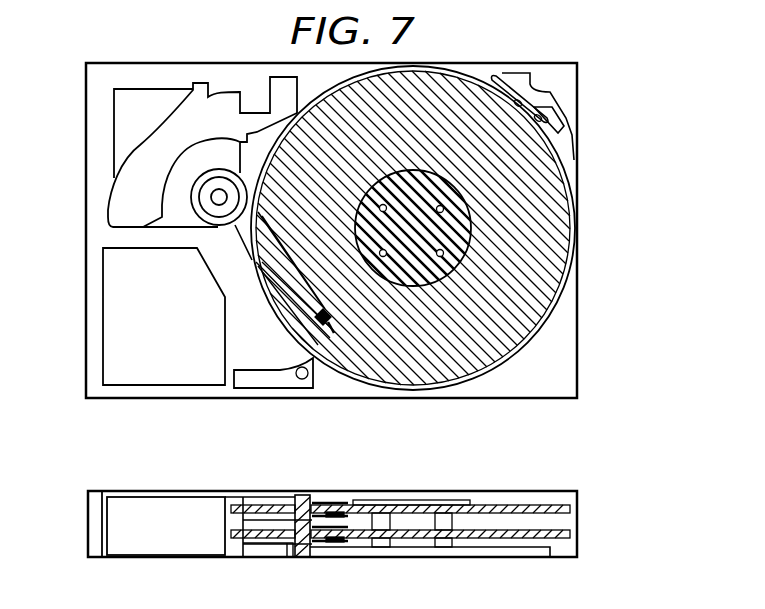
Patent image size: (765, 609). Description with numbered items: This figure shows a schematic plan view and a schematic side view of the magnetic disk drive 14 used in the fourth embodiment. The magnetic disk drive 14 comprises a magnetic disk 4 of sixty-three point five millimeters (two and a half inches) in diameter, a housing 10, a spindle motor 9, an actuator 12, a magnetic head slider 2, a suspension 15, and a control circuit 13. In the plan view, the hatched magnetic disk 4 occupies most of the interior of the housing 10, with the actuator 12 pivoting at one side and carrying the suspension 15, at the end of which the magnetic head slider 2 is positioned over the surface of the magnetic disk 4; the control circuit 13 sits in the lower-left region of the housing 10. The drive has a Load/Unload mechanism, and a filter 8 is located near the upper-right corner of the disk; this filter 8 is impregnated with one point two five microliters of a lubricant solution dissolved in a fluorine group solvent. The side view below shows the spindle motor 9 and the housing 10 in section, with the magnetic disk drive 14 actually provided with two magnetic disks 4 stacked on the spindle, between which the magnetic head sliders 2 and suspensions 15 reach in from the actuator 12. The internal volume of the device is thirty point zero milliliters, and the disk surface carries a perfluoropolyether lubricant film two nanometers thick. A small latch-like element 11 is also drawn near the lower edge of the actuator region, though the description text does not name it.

The magnetic head slider 2 is at (332, 330).
The magnetic disk 4 is at (503, 333).
The filter 8 is at (526, 106).
The spindle motor 9 is at (453, 548).
The housing 10 is at (583, 505).
The latch mechanism 11 is at (295, 380).
The actuator 12 is at (192, 213).
The control circuit 13 is at (112, 363).
The magnetic disk drive 14 is at (88, 388).
The suspension 15 is at (239, 236).